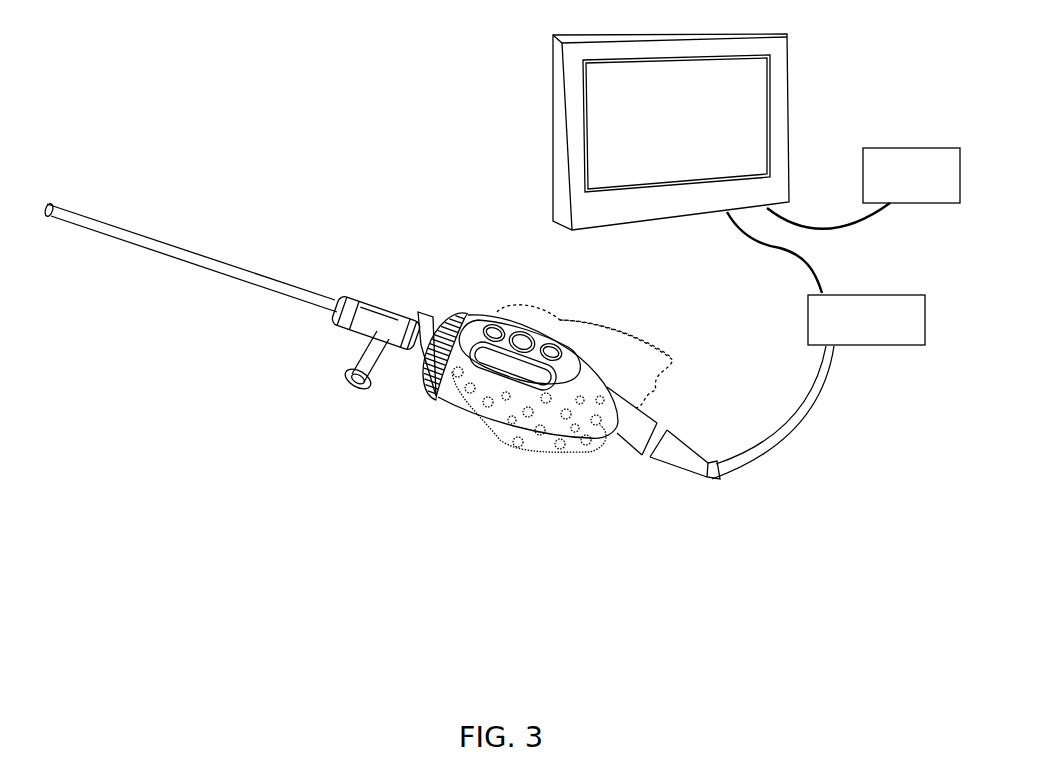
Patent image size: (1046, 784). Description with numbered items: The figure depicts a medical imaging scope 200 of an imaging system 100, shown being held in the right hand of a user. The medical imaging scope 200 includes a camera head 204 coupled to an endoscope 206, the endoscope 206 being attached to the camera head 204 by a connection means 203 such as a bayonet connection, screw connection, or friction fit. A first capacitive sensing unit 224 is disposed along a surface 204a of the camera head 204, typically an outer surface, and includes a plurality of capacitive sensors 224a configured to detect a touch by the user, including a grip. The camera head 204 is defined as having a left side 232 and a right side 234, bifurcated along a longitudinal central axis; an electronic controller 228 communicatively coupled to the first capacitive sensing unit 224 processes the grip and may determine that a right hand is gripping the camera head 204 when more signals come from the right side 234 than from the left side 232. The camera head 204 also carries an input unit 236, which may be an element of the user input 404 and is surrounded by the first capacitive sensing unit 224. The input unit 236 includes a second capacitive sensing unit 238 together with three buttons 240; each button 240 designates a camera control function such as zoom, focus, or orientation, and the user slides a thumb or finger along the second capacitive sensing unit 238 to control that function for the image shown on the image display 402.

The imaging system 100 is at (353, 75).
The medical imaging scope 200 is at (348, 215).
The connection means 203 is at (470, 317).
The camera head 204 is at (502, 285).
The surface 204a is at (607, 383).
The endoscope 206 is at (297, 325).
The first capacitive sensing unit 224 is at (590, 398).
The capacitive sensors 224a is at (484, 409).
The electronic controller 228 is at (866, 320).
The left side 232 is at (488, 468).
The right side 234 is at (583, 317).
The input unit 236 is at (565, 366).
The second capacitive sensing unit 238 is at (483, 358).
The buttons 240 is at (496, 331).
The image display 402 is at (671, 132).
The user input 404 is at (911, 175).